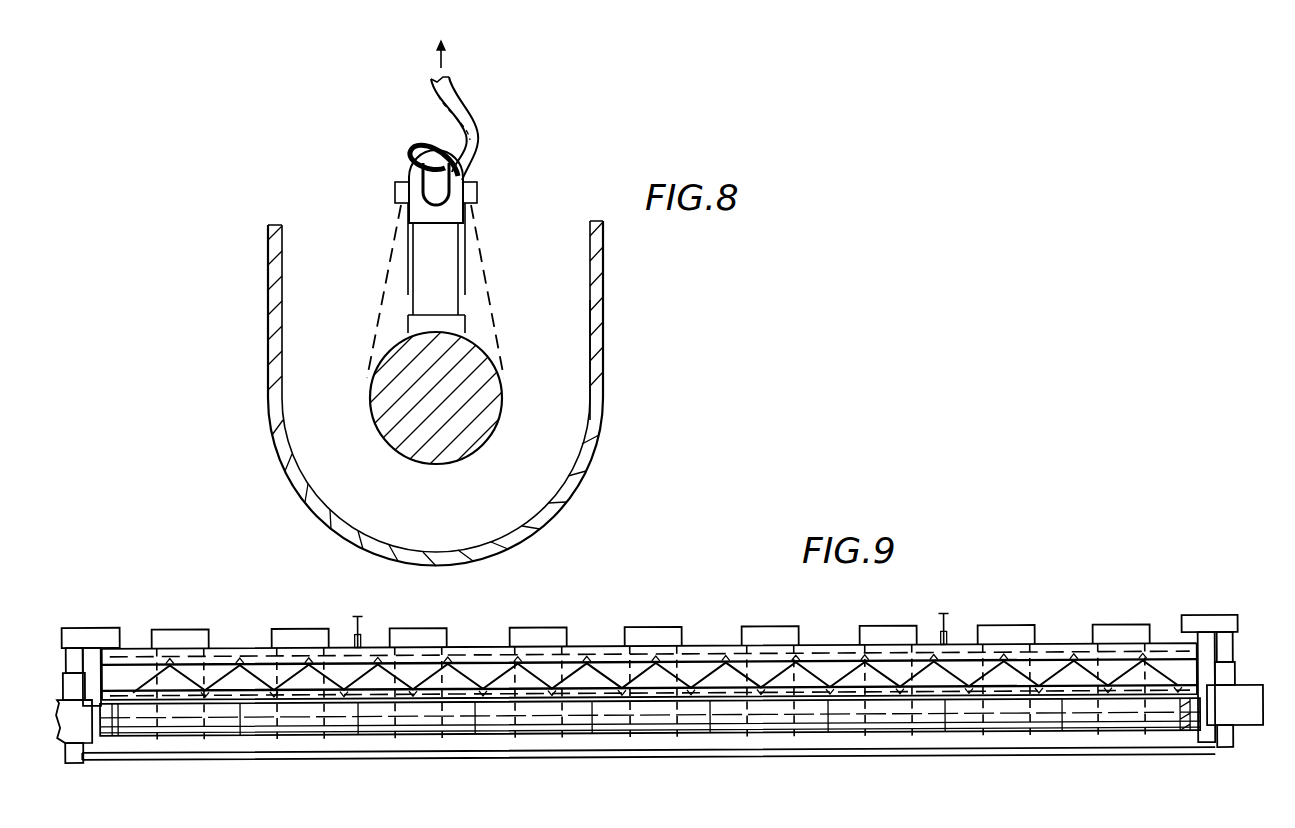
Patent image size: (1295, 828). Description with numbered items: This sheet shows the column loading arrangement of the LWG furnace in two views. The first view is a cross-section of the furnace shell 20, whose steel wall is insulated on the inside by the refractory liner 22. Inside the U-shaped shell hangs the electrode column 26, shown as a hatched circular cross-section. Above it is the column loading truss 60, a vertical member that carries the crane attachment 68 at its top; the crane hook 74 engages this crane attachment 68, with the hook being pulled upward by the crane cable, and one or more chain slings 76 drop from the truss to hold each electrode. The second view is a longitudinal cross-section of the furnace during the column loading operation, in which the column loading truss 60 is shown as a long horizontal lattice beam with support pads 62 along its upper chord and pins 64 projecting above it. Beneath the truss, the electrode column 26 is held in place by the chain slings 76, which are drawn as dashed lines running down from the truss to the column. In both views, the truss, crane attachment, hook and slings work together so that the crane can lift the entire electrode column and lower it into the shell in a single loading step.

In FIG. 8, the steel shell 20 is at (604, 311).
In FIG. 8, the refractory liner 22 is at (591, 368).
In FIG. 8, the electrode column 26 is at (492, 436).
In FIG. 9, the electrode column 26 is at (1050, 717).
In FIG. 8, the column loading truss 60 is at (460, 258).
In FIG. 9, the column loading truss 60 is at (1057, 643).
In FIG. 9, the support pads 62 is at (637, 627).
In FIG. 9, the pins 64 is at (950, 633).
In FIG. 8, the crane attachment 68 is at (412, 198).
In FIG. 8, the crane hook 74 is at (450, 95).
In FIG. 8, the chain slings 76 is at (490, 306).
In FIG. 9, the chain slings 76 is at (208, 665).